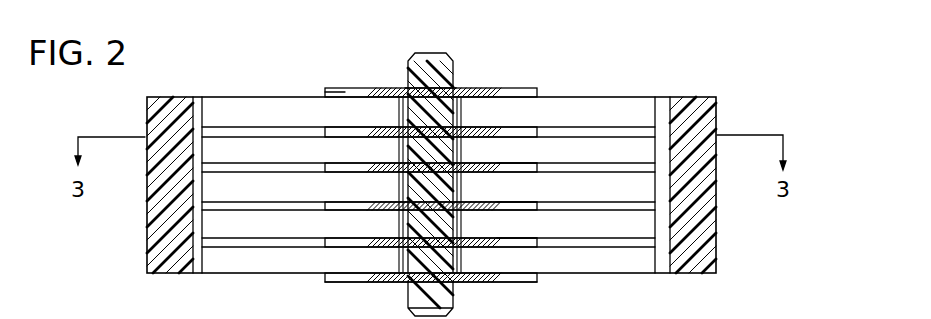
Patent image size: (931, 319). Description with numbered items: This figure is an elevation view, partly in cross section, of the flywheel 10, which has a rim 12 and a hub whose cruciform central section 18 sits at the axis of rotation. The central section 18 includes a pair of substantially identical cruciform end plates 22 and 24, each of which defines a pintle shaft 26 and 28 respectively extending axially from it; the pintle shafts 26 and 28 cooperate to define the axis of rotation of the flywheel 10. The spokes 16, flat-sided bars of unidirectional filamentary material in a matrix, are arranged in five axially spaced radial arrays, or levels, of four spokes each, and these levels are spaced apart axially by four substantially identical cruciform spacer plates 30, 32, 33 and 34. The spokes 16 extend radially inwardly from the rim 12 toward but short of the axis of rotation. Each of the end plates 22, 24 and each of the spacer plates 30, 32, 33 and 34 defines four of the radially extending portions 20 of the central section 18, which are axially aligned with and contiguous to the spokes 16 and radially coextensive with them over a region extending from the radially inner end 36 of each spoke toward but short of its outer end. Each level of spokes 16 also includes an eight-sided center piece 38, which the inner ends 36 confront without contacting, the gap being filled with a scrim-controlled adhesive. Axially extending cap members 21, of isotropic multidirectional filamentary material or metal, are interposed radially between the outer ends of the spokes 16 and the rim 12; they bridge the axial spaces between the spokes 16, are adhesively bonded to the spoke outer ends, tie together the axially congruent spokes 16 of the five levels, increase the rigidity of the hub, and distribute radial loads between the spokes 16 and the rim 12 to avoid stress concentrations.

The flywheel 10 is at (720, 84).
The rim 12 is at (160, 237).
The spokes 16 is at (222, 113).
The central section 18 is at (493, 40).
The radially extending portions 20 is at (347, 90).
The cap members 21 is at (198, 108).
The end plate 22 is at (386, 90).
The end plate 24 is at (383, 281).
The pintle shaft 26 is at (445, 68).
The pintle shaft 28 is at (440, 299).
The spacer plate 30 is at (343, 127).
The spacer plate 32 is at (507, 165).
The spacer plate 33 is at (507, 203).
The spacer plate 34 is at (507, 241).
The radially inner end 36 is at (399, 106).
The center piece 38 is at (425, 58).